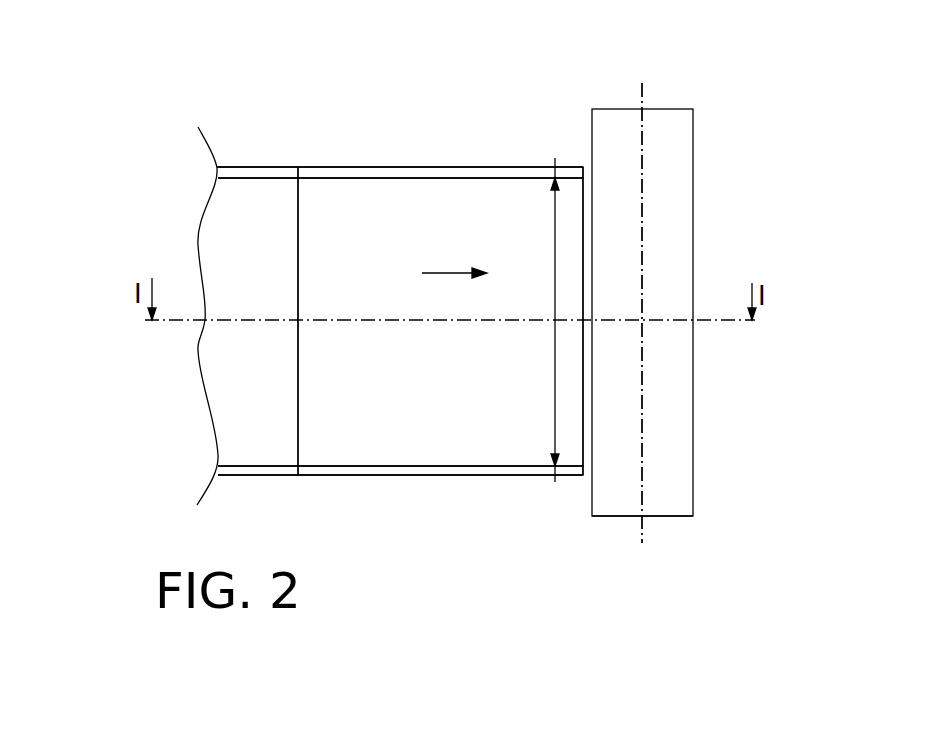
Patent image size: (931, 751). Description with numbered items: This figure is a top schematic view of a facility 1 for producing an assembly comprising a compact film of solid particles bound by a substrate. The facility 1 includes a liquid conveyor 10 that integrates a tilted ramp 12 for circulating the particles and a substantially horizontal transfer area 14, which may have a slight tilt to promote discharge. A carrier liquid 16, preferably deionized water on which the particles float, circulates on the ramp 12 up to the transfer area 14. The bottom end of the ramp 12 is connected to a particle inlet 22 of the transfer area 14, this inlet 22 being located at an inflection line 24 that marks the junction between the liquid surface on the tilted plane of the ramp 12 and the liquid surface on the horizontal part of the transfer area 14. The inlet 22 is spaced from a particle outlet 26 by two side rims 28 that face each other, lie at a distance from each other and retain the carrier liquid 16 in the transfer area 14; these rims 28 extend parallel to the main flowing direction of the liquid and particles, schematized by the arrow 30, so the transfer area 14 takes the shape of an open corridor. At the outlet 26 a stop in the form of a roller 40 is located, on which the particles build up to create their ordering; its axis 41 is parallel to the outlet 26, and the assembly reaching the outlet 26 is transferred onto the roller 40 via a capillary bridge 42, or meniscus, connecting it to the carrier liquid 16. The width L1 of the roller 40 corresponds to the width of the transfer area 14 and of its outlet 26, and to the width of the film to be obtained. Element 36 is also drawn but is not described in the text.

The facility 1 is at (719, 85).
The liquid conveyor 10 is at (460, 542).
The tilted ramp 12 is at (250, 487).
The transfer area 14 is at (495, 482).
The carrier liquid 16 is at (538, 236).
The particle inlet 22 is at (298, 335).
The inflection line 24 is at (298, 287).
The particle outlet 26 is at (580, 192).
The side rims 28 is at (515, 170).
The arrow 30 is at (447, 273).
The cover block 36 is at (722, 510).
The roller 40 is at (628, 508).
The axis 41 is at (642, 477).
The capillary bridge 42 is at (590, 466).
The width L1 is at (555, 160).